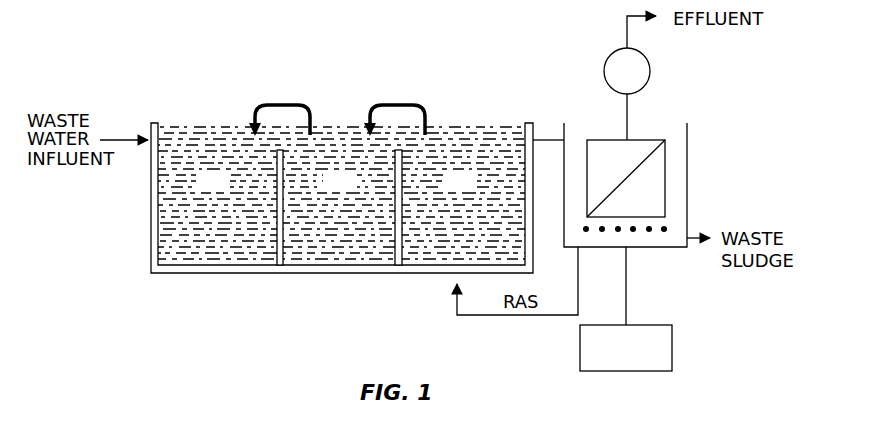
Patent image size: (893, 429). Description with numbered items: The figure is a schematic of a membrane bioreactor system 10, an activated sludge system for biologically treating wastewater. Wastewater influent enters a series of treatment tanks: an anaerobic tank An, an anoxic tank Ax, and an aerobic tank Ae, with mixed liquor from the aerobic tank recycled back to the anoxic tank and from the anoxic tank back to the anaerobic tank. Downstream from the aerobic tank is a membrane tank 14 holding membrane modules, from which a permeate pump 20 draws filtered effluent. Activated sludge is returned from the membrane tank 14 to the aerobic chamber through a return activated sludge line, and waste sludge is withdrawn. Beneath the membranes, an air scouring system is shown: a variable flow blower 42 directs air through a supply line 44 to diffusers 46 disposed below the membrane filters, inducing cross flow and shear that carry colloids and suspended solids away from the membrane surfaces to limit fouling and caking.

The membrane bioreactor system 10 is at (298, 58).
The membrane tank 14 is at (690, 156).
The permeate pump 20 is at (608, 56).
The variable flow blower 42 is at (656, 325).
The supply line 44 is at (628, 282).
The diffuser 46 is at (668, 226).